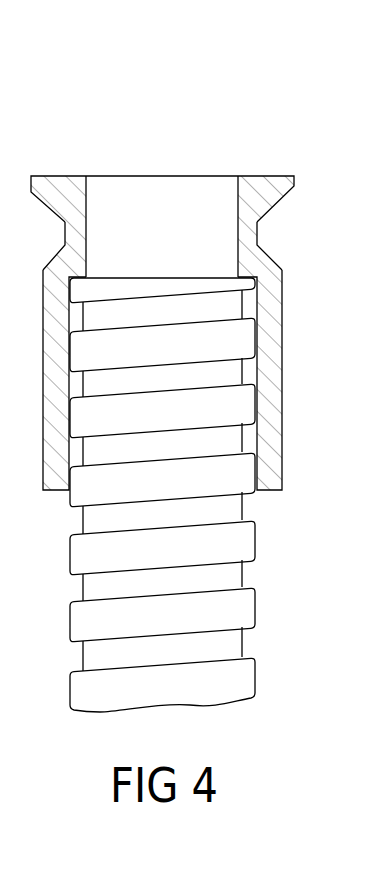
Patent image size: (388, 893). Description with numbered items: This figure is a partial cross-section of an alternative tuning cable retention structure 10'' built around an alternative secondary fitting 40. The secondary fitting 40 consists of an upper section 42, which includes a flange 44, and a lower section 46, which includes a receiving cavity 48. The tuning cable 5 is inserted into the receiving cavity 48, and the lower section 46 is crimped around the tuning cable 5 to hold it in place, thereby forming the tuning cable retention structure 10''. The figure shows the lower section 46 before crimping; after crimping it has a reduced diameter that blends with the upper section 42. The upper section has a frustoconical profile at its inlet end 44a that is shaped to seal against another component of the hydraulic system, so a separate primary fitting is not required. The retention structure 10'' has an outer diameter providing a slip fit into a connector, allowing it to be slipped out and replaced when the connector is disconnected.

The tuning cable retention structure 10'' is at (184, 385).
The alternative secondary fitting 40 is at (63, 165).
The upper section 42 is at (252, 232).
The flange 44 is at (272, 198).
The inlet end 44a is at (183, 190).
The lower section 46 is at (273, 328).
The receiving cavity 48 is at (268, 431).
The tuning cable 5 is at (245, 538).